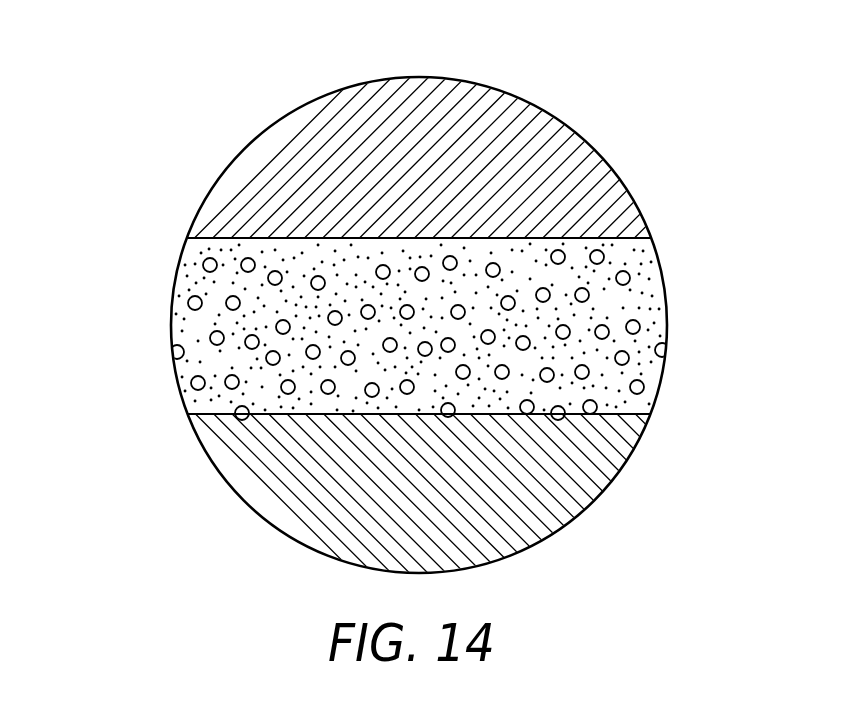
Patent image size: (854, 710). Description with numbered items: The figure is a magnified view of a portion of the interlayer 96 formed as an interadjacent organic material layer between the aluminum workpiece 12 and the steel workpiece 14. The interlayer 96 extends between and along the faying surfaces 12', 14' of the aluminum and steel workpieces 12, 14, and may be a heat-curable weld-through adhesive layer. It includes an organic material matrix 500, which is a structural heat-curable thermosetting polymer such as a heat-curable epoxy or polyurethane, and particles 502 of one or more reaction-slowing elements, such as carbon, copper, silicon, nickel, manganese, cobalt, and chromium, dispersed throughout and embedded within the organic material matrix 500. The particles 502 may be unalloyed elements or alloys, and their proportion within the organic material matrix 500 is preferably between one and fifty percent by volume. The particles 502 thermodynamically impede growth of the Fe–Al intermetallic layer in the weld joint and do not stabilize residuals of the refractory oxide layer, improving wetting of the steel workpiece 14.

The aluminum workpiece 12 is at (509, 153).
The steel workpiece 14 is at (510, 499).
The faying surface of the aluminum workpiece 12' is at (379, 240).
The faying surface of the steel workpiece 14' is at (376, 411).
The interlayer 96 is at (160, 332).
The organic material matrix 500 is at (614, 373).
The particles 502 is at (629, 357).